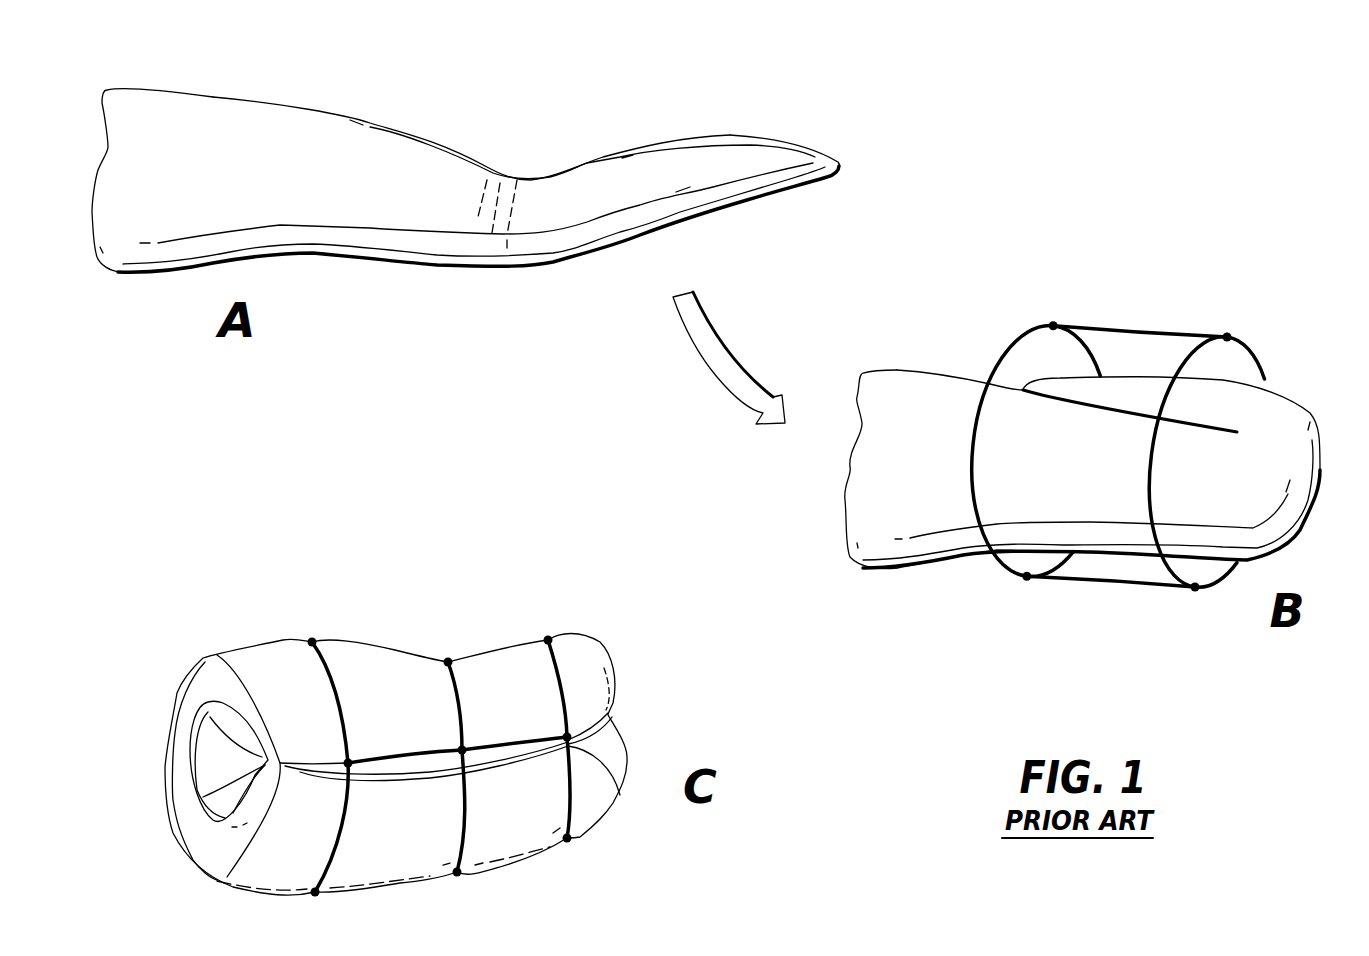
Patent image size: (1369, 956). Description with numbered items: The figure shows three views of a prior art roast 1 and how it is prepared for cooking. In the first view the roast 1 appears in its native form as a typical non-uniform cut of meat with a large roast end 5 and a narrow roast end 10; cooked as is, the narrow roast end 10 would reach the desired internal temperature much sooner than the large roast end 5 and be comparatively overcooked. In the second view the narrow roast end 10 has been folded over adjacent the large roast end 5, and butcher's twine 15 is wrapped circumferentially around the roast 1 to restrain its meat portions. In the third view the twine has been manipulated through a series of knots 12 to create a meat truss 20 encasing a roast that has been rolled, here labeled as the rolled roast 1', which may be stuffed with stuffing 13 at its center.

The roast 1 is at (725, 477).
The rolled insole 1' is at (421, 765).
The large roast end 5 is at (125, 240).
The narrow roast end 10 is at (833, 158).
The knots 12 is at (1195, 590).
The stuffing 13 is at (220, 799).
The butcher's twine 15 is at (1178, 330).
The meat truss 20 is at (549, 632).